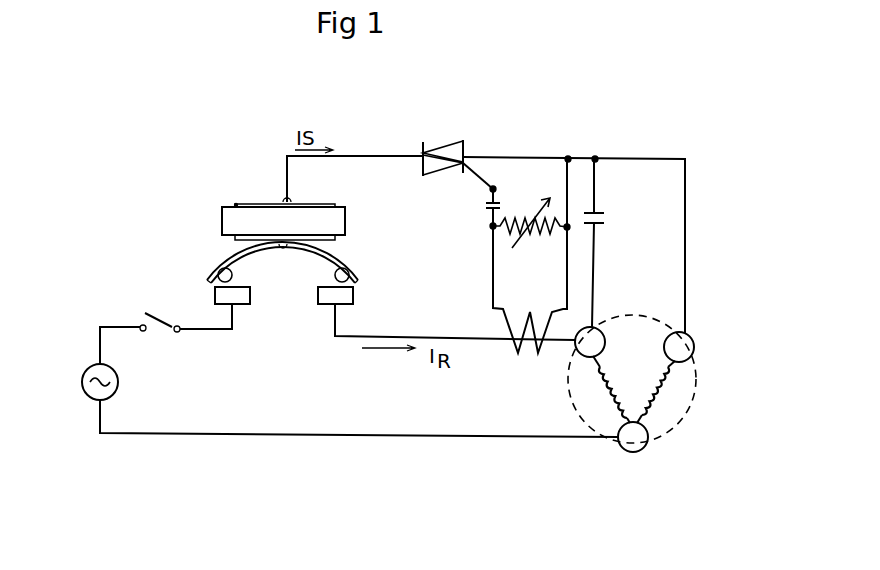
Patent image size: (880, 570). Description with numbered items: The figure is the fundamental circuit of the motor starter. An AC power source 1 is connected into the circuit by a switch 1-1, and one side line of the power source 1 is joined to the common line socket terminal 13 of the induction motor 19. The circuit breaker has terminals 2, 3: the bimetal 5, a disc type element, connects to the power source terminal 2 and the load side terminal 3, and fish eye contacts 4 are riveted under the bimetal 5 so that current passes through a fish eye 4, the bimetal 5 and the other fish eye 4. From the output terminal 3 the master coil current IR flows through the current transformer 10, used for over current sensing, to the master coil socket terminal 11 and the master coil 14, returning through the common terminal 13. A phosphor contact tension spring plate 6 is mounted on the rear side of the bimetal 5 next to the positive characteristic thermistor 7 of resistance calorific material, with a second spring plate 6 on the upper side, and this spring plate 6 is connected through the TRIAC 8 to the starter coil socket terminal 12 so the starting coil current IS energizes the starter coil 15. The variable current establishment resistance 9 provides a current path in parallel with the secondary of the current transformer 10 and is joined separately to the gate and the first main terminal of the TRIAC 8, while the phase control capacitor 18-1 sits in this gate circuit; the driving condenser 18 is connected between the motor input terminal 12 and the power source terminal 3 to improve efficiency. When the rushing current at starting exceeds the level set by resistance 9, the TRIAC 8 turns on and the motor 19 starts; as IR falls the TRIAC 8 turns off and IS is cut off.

The AC power source 1 is at (82, 386).
The switch 1-1 is at (167, 327).
The circuit breaker terminal 2 is at (215, 293).
The circuit breaker terminal 3 is at (347, 296).
The fish eye contacts 4 is at (330, 290).
The bimetal 5 is at (228, 258).
The contact tension spring plate 6 is at (248, 235).
The positive characteristic thermistor 7 is at (338, 220).
The TRIAC 8 is at (423, 152).
The current establishment resistance 9 is at (528, 165).
The current transformer 10 is at (512, 330).
The master coil socket terminal 11 is at (595, 327).
The starter coil socket terminal 12 is at (693, 337).
The common line socket terminal 13 is at (647, 447).
The master coil 14 is at (610, 395).
The starter coil 15 is at (660, 397).
The driving condenser 18 is at (597, 210).
The phase control capacitor 18-1 is at (488, 210).
The induction motor 19 is at (650, 364).